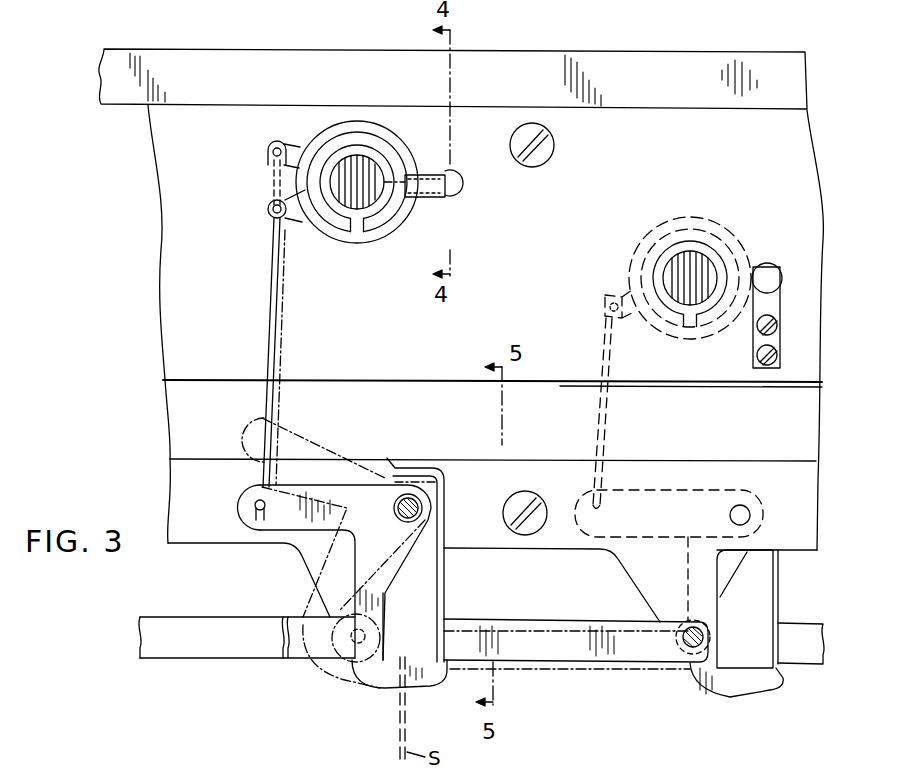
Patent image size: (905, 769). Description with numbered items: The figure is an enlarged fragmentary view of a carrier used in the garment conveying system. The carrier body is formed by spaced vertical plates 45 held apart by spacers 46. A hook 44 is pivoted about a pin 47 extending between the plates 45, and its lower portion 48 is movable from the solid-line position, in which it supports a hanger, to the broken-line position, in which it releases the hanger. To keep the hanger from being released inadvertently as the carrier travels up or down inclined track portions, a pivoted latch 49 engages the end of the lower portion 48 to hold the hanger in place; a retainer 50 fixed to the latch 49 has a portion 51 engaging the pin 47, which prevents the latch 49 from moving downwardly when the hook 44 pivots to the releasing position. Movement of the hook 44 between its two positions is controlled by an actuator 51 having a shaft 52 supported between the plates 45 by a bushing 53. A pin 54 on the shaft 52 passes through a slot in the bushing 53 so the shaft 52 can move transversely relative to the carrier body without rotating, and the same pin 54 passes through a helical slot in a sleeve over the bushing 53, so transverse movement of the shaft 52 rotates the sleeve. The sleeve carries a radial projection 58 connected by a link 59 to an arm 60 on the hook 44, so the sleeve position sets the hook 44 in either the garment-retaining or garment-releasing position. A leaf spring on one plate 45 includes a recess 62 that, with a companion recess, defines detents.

The hook 44 is at (366, 692).
The vertical plates 45 is at (164, 334).
The spacers 46 is at (540, 155).
The pin 47 is at (404, 514).
The lower portion of hook 48 is at (440, 676).
The pivoted latch 49 is at (513, 625).
The retainer 50 is at (446, 584).
The portion of retainer / actuator 51 is at (266, 156).
The shaft 52 is at (352, 158).
The bushing 53 is at (340, 150).
The pin 54 is at (412, 172).
The radial projection 58 is at (268, 215).
The link 59 is at (272, 290).
The arm 60 is at (278, 532).
The recess 62 is at (438, 199).